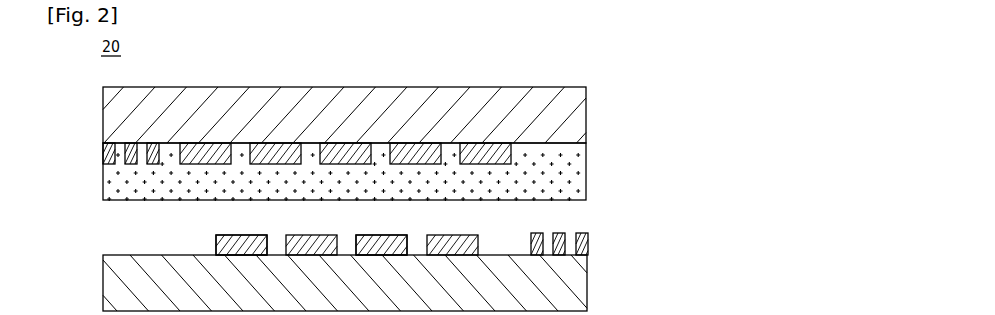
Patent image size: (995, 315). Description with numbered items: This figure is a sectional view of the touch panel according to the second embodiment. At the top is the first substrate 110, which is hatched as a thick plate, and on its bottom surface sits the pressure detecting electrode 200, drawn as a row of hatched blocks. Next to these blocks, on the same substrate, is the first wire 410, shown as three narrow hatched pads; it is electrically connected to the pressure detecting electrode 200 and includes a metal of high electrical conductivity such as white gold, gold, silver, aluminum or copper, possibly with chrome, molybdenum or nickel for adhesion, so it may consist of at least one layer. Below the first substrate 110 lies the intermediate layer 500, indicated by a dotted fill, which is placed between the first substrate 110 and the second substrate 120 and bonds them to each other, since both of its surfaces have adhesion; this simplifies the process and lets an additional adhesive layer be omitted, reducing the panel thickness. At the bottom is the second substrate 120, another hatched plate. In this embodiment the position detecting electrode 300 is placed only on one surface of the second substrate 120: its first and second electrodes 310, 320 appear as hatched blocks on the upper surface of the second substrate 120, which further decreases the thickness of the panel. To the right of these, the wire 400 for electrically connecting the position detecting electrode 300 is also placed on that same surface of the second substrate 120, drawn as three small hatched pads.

The first substrate 110 is at (586, 108).
The second substrate 120 is at (545, 278).
The pressure detecting electrode 200 is at (511, 158).
The position detecting electrode 300 is at (215, 238).
The first electrode 310 is at (241, 245).
The second electrode 320 is at (381, 245).
The wire 400 is at (589, 240).
The first wire 410 is at (102, 151).
The intermediate layer 500 is at (586, 178).